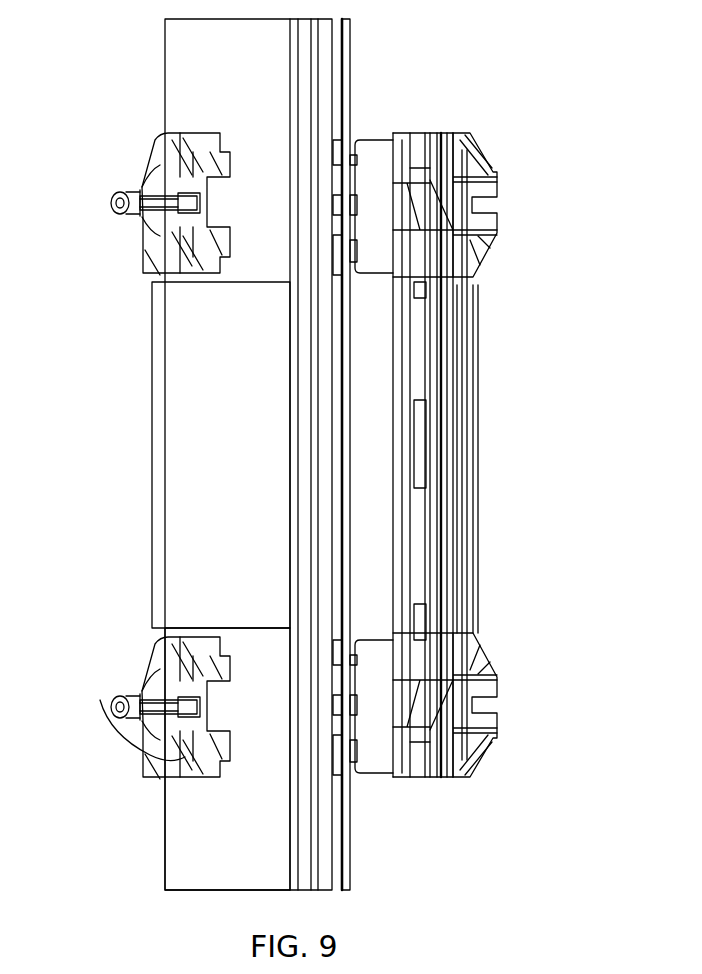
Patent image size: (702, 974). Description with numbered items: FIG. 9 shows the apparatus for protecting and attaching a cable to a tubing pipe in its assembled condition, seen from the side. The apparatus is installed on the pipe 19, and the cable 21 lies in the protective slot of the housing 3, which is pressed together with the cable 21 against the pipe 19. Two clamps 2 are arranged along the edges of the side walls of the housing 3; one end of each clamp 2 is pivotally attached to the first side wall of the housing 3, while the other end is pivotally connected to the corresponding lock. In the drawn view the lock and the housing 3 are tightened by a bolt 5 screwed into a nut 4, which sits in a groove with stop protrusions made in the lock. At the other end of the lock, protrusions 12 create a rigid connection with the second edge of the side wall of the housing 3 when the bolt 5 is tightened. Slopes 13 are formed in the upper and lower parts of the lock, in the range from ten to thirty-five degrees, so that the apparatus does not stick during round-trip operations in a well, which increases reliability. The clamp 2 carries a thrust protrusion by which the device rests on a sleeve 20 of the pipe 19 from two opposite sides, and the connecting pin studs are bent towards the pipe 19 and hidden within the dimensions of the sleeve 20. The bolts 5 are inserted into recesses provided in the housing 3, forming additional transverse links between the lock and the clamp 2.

The clamp 2 is at (150, 282).
The housing 3 is at (456, 455).
The nut 4 is at (140, 190).
The bolt 5 is at (130, 186).
The protrusions 12 is at (162, 190).
The slopes 13 is at (172, 671).
The pipe 19 is at (225, 828).
The sleeve 20 is at (225, 507).
The cable 21 is at (303, 46).